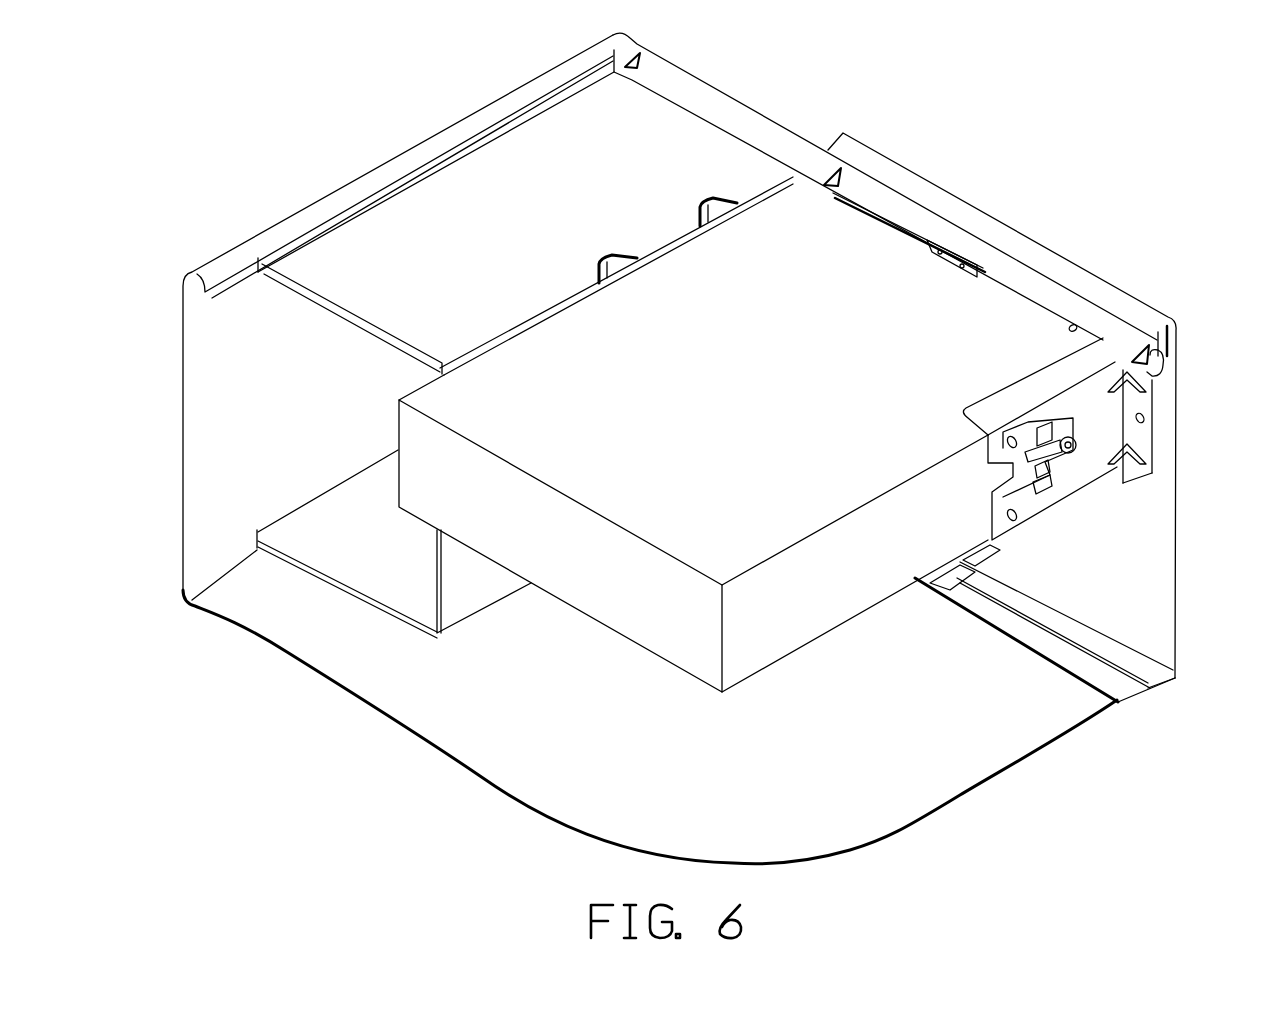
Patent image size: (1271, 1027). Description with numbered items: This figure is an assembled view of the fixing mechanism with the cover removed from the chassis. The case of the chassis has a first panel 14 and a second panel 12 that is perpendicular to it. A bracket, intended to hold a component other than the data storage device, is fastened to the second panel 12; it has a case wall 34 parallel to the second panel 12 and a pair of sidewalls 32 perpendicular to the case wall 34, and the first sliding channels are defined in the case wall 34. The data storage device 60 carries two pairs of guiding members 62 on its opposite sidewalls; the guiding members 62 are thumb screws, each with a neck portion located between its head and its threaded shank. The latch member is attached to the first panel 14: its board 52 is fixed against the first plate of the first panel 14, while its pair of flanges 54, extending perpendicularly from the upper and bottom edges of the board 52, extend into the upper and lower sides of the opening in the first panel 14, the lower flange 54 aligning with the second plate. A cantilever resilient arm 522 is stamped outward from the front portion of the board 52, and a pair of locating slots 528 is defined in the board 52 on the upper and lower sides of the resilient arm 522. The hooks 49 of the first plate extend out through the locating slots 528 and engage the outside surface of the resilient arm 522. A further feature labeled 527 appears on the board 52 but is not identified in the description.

The second panel 12 is at (203, 405).
The first panel 14 is at (1150, 600).
The sidewalls 32 is at (437, 222).
The case wall 34 is at (455, 595).
The hooks 49 is at (1040, 472).
The board 52 is at (1113, 400).
The resilient arm 522 is at (1033, 463).
The locking tab 527 is at (1063, 464).
The locating slots 528 is at (1043, 493).
The flanges 54 is at (1043, 385).
The data storage device 60 is at (655, 617).
The guiding members 62 is at (1076, 443).